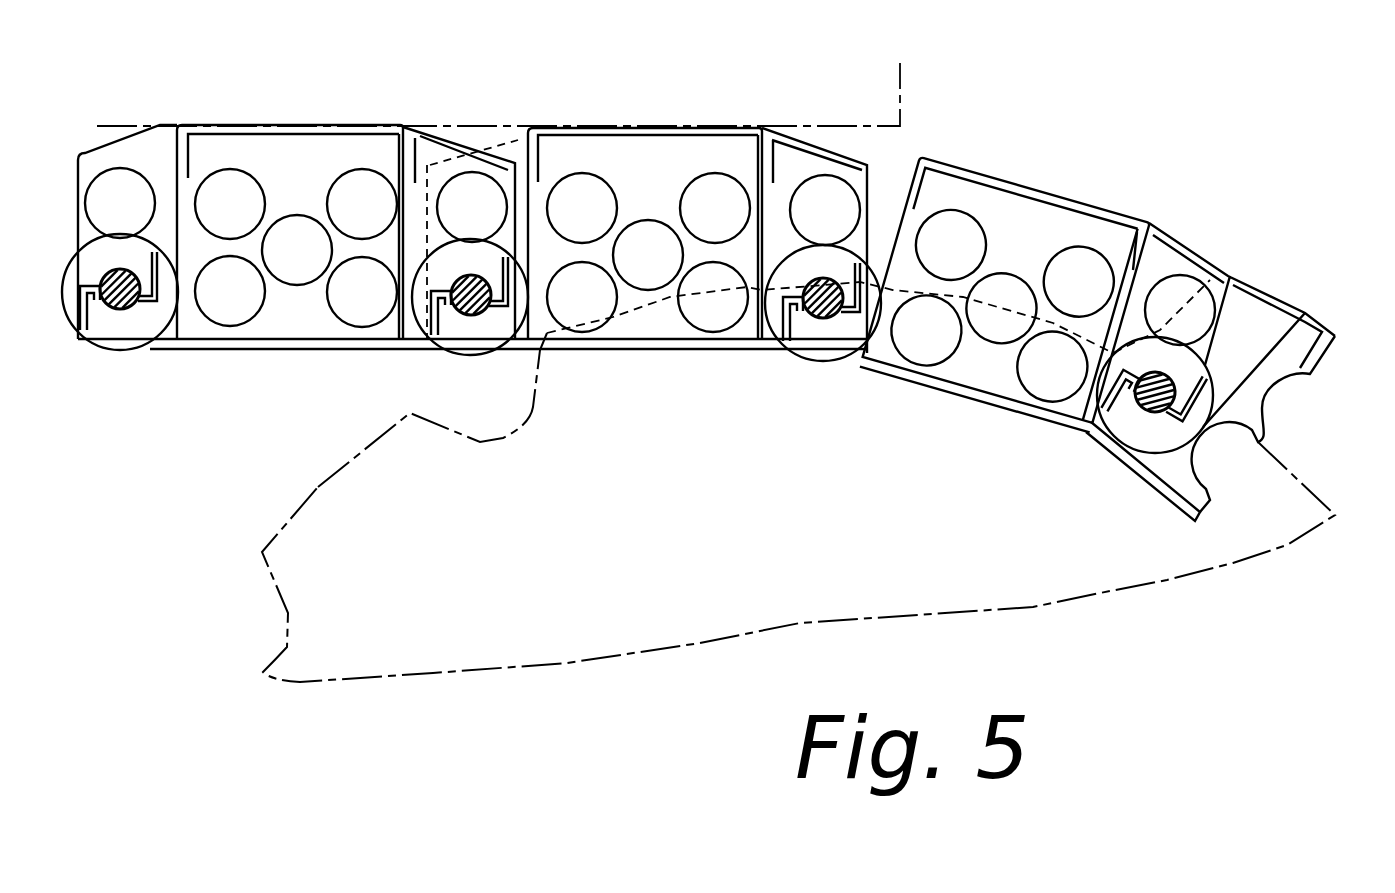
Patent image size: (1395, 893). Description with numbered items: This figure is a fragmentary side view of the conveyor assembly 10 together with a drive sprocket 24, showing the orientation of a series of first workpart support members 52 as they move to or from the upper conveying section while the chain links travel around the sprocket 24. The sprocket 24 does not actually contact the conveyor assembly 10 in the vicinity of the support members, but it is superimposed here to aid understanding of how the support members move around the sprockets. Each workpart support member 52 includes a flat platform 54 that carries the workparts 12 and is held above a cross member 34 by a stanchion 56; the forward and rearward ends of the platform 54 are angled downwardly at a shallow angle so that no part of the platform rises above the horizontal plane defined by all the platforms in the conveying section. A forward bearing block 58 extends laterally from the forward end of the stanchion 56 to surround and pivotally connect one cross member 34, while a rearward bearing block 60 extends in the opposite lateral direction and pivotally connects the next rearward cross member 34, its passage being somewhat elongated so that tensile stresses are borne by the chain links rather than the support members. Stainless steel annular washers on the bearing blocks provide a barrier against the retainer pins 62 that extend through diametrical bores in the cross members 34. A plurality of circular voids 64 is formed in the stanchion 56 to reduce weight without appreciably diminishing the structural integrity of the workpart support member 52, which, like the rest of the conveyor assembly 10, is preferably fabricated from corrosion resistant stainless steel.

The conveyor assembly 10 is at (1240, 217).
The workparts 12 is at (905, 100).
The sprocket 24 is at (318, 487).
The cross member 34 is at (1155, 405).
The first workpart support member 52 is at (1305, 300).
The flat platform 54 is at (1035, 182).
The stanchion 56 is at (1280, 447).
The forward bearing block 58 is at (1150, 470).
The rearward bearing block 60 is at (1105, 405).
The retainer pins 62 is at (1128, 395).
The circular voids 64 is at (1305, 400).